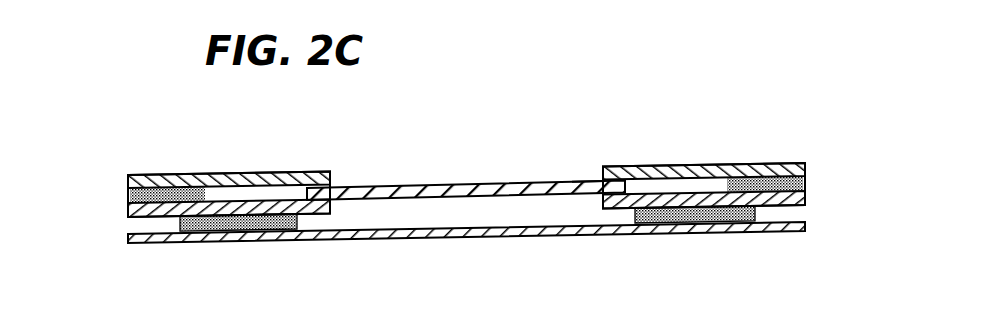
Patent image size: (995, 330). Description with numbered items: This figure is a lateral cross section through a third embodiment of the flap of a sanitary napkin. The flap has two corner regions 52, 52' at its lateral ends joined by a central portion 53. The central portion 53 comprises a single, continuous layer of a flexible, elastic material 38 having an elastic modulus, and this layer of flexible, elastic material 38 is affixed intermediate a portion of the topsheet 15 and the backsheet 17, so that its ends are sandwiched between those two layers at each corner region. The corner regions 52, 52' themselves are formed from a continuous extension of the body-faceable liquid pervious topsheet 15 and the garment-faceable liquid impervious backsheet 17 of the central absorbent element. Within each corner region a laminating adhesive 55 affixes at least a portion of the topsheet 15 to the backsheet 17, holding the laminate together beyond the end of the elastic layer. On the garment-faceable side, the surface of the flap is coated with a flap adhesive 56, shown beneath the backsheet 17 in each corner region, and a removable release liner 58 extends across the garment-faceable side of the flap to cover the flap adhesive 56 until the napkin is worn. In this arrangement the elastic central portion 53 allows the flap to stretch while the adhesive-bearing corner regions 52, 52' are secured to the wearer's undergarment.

The topsheet 15 is at (235, 173).
The backsheet 17 is at (128, 212).
The flexible, elastic material 38 is at (588, 181).
The corner region 52 is at (704, 143).
The corner region 52' is at (229, 154).
The central portion 53 is at (480, 170).
The laminating adhesive 55 is at (127, 192).
The flap adhesive 56 is at (230, 229).
The release liner 58 is at (452, 238).